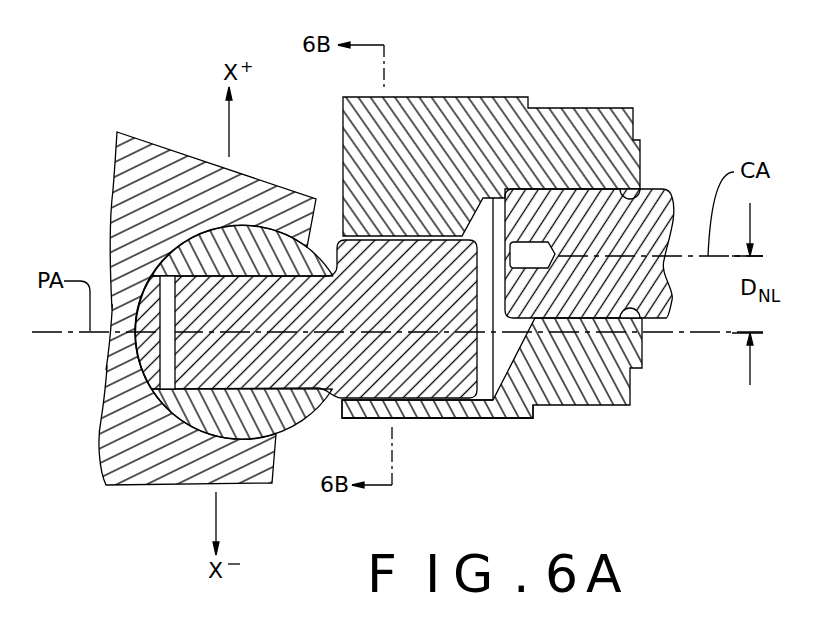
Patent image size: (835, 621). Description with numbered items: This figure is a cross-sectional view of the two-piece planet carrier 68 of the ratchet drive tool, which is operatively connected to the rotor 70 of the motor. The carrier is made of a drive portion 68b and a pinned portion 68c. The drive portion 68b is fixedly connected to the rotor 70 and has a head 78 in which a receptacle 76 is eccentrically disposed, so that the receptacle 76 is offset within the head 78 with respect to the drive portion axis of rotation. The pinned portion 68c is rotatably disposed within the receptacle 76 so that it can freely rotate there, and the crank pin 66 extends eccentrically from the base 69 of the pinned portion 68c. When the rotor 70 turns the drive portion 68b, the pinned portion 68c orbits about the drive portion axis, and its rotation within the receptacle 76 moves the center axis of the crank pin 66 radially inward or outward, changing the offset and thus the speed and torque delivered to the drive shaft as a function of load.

The planet carrier 68 is at (326, 434).
The drive portion 68b is at (557, 388).
The pinned portion 68c is at (477, 420).
The base 69 is at (372, 262).
The crank pin 66 is at (200, 346).
The rotor 70 is at (602, 223).
The receptacle 76 is at (413, 400).
The head 78 is at (430, 128).